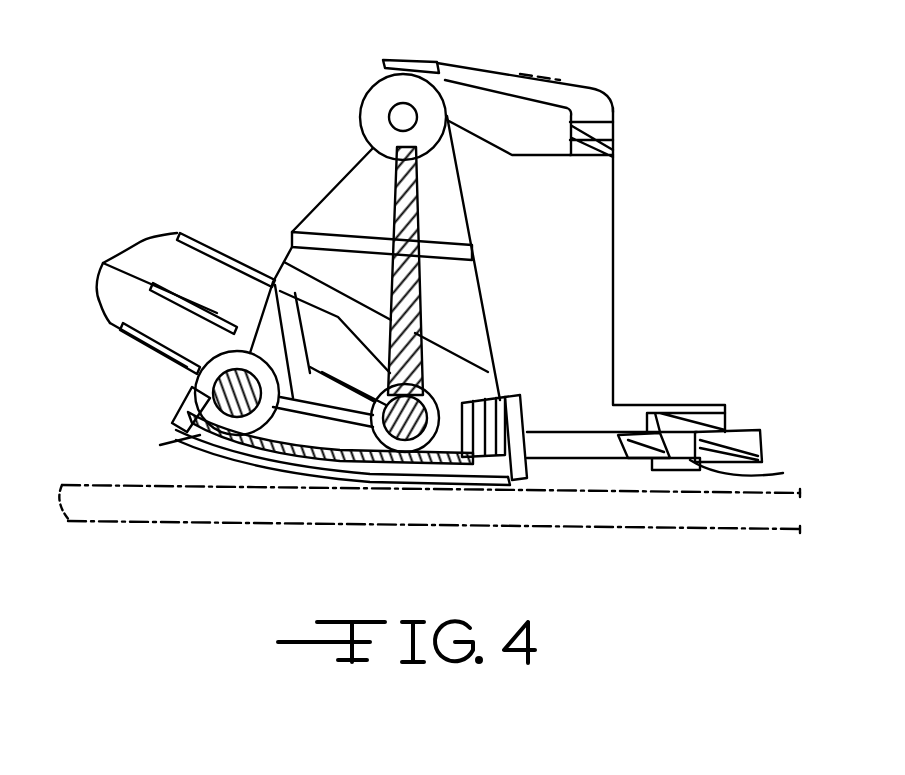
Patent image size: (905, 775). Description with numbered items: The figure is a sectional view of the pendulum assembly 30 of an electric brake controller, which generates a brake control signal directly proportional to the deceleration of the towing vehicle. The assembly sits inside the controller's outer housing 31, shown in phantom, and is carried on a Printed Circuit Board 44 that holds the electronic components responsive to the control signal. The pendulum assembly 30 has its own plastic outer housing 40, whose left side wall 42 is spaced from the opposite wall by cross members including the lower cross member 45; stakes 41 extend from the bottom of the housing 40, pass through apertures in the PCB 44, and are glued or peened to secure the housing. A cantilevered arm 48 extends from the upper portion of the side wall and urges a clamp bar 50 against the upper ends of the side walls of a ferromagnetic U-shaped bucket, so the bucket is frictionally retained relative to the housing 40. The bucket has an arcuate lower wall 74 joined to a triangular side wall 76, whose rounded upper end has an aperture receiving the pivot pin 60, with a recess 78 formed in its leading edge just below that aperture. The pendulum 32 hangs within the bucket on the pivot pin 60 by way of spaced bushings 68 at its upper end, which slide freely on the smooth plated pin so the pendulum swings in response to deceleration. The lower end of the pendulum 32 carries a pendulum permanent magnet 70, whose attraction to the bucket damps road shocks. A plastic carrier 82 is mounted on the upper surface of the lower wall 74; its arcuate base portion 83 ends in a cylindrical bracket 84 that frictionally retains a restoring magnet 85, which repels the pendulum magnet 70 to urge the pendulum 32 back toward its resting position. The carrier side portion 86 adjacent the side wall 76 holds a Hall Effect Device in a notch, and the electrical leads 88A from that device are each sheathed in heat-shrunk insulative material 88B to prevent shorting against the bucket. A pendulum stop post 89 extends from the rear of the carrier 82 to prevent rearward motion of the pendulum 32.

The pendulum assembly 30 is at (648, 68).
The outer housing 31 is at (778, 512).
The pendulum 32 is at (415, 284).
The outer housing 40 is at (613, 272).
The stakes 41 is at (754, 471).
The left side wall 42 is at (554, 283).
The Printed Circuit Board 44 is at (590, 135).
The lower cross member 45 is at (705, 412).
The cantilevered arm 48 is at (507, 80).
The clamp bar 50 is at (415, 58).
The pivot pin 60 is at (453, 103).
The bushings 68 is at (380, 103).
The pendulum permanent magnet 70 is at (427, 388).
The lower wall 74 is at (400, 480).
The side wall 76 is at (462, 205).
The recesses 78 is at (356, 142).
The carrier 82 is at (268, 458).
The base portion 83 is at (353, 480).
The bracket 84 is at (200, 377).
The restoring magnet 85 is at (227, 420).
The side portion 86 is at (320, 288).
The electrical leads 88A is at (106, 262).
The insulative material 88B is at (268, 304).
The pendulum stop post 89 is at (512, 405).